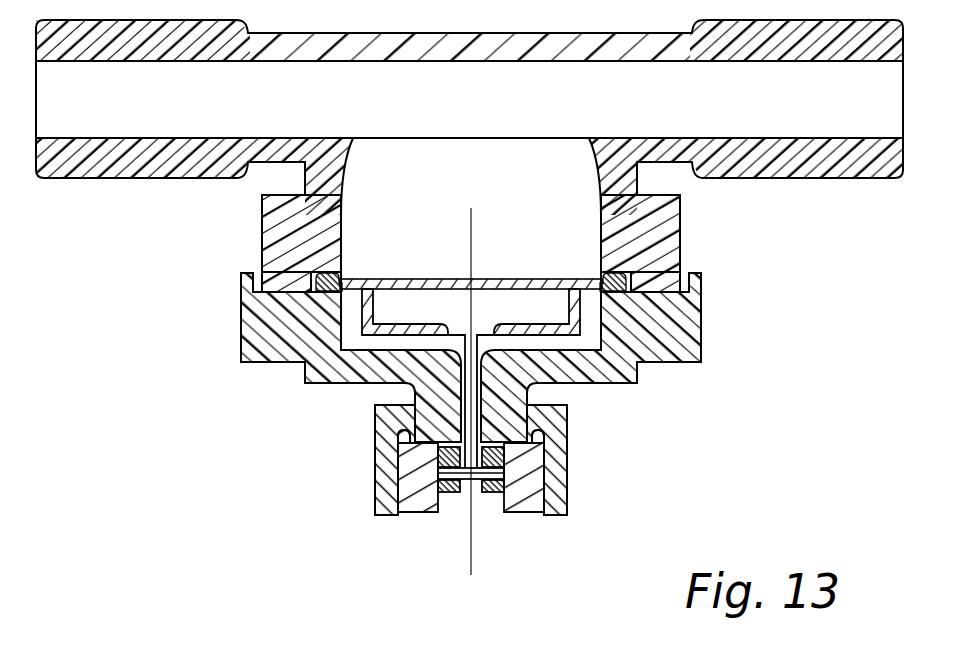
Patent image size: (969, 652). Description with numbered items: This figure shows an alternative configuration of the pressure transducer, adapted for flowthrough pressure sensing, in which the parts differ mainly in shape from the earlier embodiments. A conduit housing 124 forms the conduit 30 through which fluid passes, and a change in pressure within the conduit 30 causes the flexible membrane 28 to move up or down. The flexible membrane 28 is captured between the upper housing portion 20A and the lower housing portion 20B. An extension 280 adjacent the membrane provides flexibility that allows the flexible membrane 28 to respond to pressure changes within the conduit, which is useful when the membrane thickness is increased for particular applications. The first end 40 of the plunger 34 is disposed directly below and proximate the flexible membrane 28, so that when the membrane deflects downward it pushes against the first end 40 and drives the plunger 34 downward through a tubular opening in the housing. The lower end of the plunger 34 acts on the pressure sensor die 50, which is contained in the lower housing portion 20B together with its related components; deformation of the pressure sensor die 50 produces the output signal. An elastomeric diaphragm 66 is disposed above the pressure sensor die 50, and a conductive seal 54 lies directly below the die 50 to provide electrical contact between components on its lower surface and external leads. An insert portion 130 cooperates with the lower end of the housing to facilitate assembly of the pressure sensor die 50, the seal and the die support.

The conduit housing 124 is at (88, 165).
The conduit 30 is at (378, 214).
The upper housing portion 20A is at (666, 227).
The extension 280 is at (590, 292).
The lower housing portion 20B is at (690, 361).
The flexible membrane 28 is at (305, 362).
The first end of the plunger 40 is at (384, 311).
The plunger 34 is at (480, 393).
The elastomeric diaphragm 66 is at (405, 462).
The pressure sensor die 50 is at (495, 468).
The conductive seal 54 is at (493, 498).
The insert portion 130 is at (415, 505).